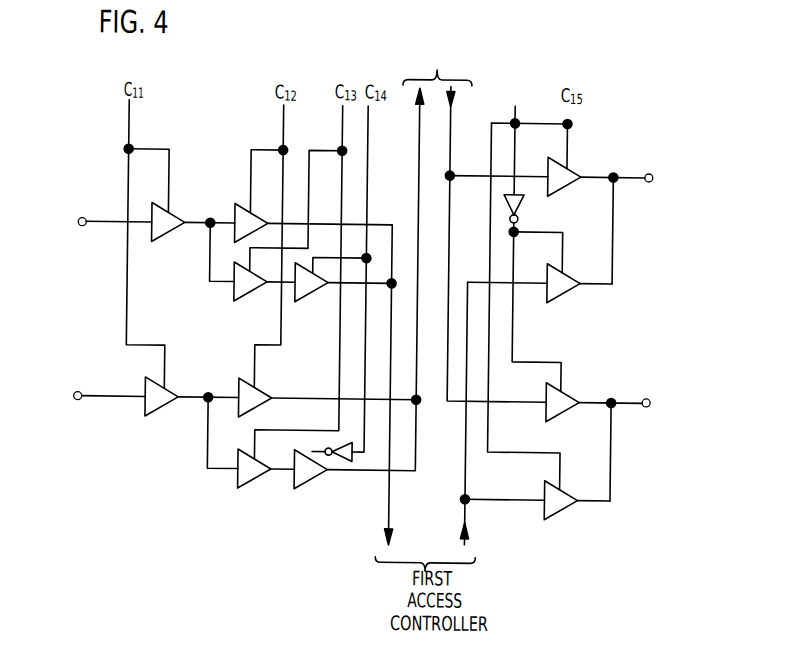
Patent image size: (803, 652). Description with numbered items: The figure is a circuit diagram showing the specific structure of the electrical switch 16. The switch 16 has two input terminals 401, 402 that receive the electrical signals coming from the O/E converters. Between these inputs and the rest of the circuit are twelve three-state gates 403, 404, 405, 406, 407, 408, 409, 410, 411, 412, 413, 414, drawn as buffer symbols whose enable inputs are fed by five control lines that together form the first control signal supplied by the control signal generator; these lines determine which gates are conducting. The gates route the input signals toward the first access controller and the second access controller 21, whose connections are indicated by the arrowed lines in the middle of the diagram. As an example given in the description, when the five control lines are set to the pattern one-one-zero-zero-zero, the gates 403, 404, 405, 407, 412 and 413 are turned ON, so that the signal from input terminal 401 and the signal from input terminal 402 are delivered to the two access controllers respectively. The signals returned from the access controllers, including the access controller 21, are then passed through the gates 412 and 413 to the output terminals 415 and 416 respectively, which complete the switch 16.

The electrical switch 16 is at (170, 540).
The access controller 21 is at (442, 43).
The input terminal 401 is at (77, 227).
The input terminal 402 is at (74, 400).
The three-state gate 403 is at (166, 234).
The three-state gate 404 is at (167, 395).
The three-state gate 405 is at (245, 204).
The three-state gate 406 is at (252, 296).
The three-state gate 407 is at (261, 393).
The three-state gate 408 is at (262, 482).
The three-state gate 409 is at (317, 296).
The three-state gate 410 is at (317, 482).
The three-state gate 411 is at (563, 180).
The three-state gate 412 is at (555, 296).
The three-state gate 413 is at (556, 415).
The three-state gate 414 is at (565, 515).
The output terminal 415 is at (651, 175).
The output terminal 416 is at (650, 396).